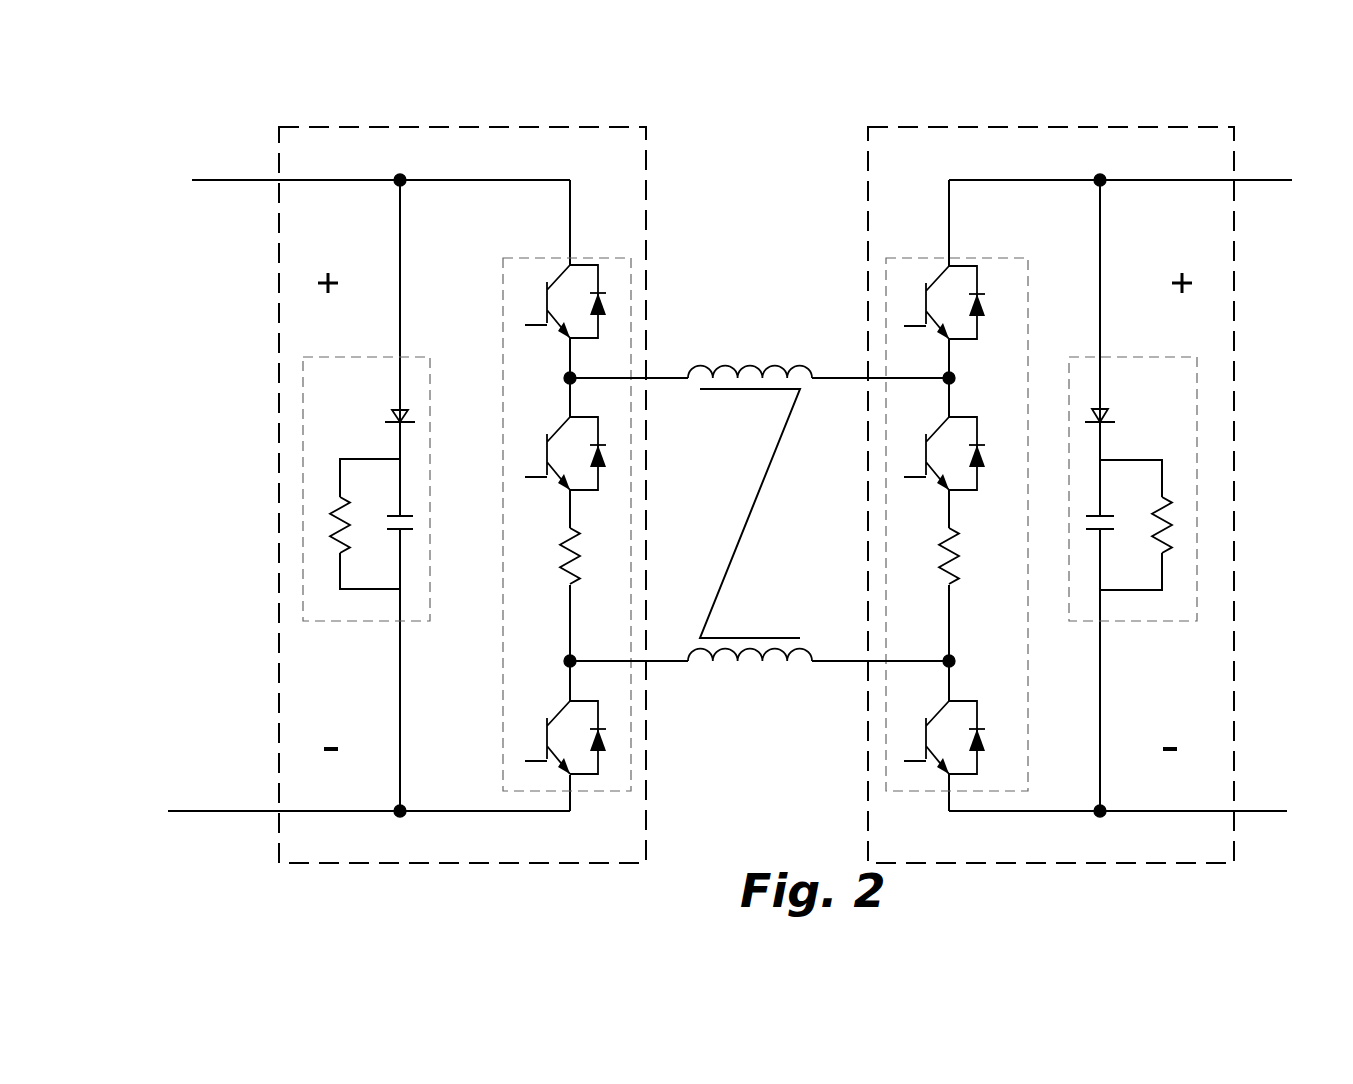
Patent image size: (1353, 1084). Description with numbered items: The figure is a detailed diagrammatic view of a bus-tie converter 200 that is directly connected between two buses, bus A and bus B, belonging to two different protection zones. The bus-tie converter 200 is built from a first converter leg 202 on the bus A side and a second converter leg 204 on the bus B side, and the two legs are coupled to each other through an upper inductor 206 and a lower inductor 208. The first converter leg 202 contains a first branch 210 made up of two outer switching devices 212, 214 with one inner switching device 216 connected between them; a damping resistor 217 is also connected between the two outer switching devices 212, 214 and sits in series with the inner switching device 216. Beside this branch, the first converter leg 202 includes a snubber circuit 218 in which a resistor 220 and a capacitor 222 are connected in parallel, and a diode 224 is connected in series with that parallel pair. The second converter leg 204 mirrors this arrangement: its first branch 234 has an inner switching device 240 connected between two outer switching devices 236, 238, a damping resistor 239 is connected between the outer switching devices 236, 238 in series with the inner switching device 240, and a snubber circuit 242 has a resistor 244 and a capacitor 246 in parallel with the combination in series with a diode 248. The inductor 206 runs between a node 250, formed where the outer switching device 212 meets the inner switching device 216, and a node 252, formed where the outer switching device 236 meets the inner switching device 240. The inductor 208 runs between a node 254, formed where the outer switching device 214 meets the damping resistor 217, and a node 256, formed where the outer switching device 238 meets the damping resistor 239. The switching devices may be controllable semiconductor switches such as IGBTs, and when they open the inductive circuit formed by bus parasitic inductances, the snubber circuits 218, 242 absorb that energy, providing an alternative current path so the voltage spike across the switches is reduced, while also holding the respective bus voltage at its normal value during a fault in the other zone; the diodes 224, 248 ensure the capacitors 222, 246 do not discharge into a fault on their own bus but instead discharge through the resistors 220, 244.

The bus-tie converter 200 is at (148, 123).
The first converter leg 202 is at (646, 127).
The second converter leg 204 is at (868, 156).
The inductor 206 is at (750, 368).
The inductor 208 is at (770, 668).
The first branch 210 is at (633, 318).
The outer switching device 212 is at (600, 272).
The outer switching device 214 is at (600, 775).
The inner switching device 216 is at (600, 425).
The damping resistor 217 is at (562, 585).
The snubber circuit 218 is at (372, 357).
The resistor 220 is at (330, 525).
The capacitor 222 is at (397, 531).
The diode 224 is at (392, 412).
The first branch 234 is at (886, 320).
The outer switching device 236 is at (926, 283).
The outer switching device 238 is at (926, 723).
The damping resistor 239 is at (940, 558).
The inner switching device 240 is at (926, 444).
The snubber circuit 242 is at (1197, 357).
The resistor 244 is at (1172, 528).
The capacitor 246 is at (1104, 533).
The diode 248 is at (1106, 418).
The node 250 is at (565, 378).
The node 252 is at (955, 380).
The node 254 is at (566, 665).
The node 256 is at (955, 661).